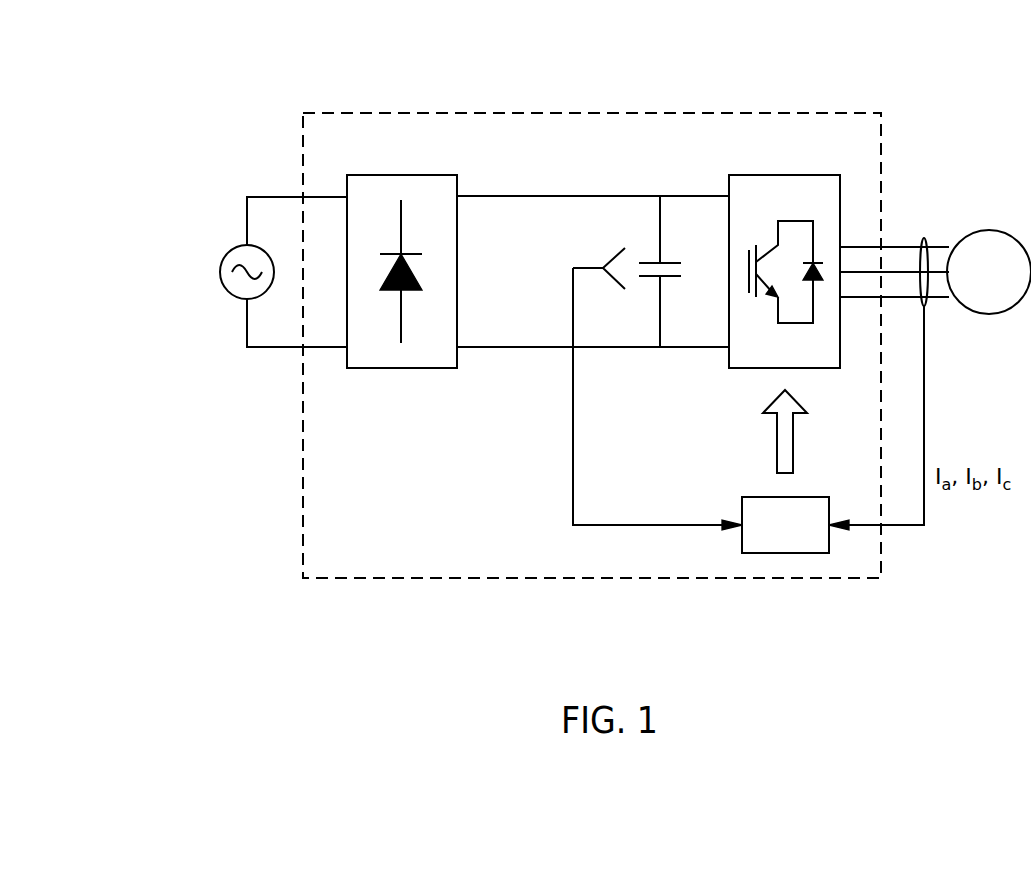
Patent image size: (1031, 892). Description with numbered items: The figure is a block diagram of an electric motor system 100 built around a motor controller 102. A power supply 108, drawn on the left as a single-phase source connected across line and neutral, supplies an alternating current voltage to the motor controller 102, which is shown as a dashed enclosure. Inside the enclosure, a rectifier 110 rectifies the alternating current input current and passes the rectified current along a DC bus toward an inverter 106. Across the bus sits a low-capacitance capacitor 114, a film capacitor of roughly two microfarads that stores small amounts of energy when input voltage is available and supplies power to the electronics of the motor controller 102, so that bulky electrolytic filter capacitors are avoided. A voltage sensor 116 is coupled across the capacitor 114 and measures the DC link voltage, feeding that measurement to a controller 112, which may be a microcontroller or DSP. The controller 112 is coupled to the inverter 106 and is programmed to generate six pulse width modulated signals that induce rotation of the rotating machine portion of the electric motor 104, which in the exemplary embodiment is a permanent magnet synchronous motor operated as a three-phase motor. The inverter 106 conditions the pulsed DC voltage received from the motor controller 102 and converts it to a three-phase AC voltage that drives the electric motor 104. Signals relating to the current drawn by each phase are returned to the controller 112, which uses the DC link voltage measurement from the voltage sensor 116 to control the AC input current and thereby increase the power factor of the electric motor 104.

The electric motor system 100 is at (850, 53).
The motor controller 102 is at (367, 113).
The electric motor 104 is at (971, 287).
The inverter 106 is at (812, 175).
The power supply 108 is at (238, 250).
The rectifier 110 is at (433, 175).
The controller 112 is at (767, 539).
The low-capacitance capacitor 114 is at (653, 262).
The voltage sensor 116 is at (587, 268).